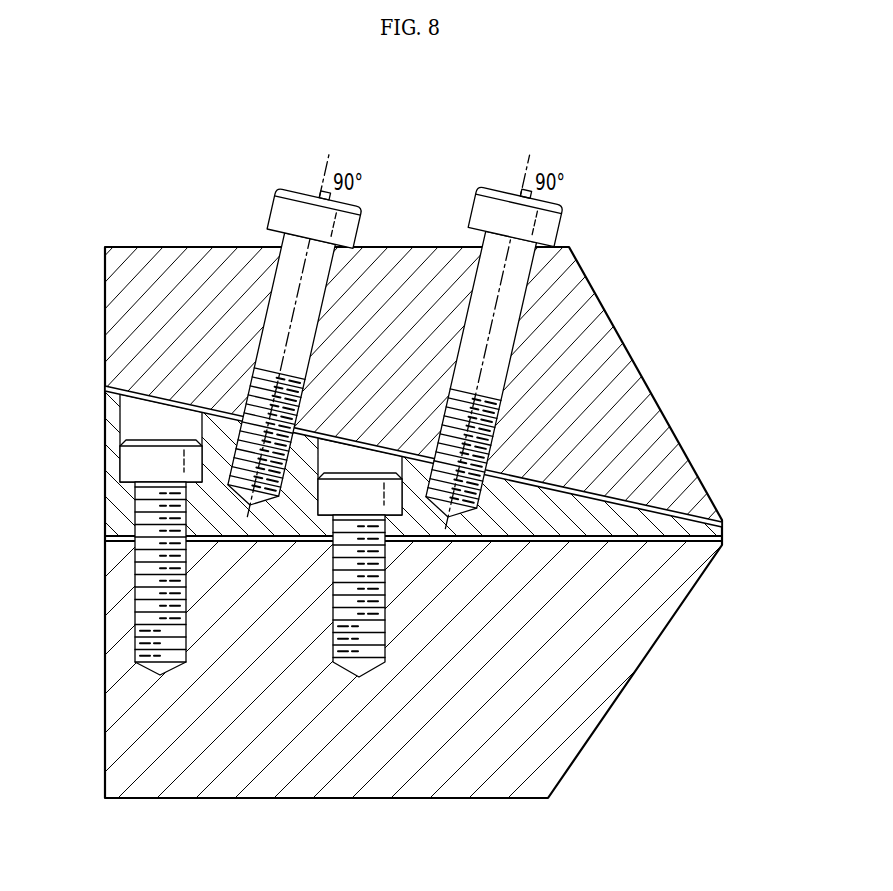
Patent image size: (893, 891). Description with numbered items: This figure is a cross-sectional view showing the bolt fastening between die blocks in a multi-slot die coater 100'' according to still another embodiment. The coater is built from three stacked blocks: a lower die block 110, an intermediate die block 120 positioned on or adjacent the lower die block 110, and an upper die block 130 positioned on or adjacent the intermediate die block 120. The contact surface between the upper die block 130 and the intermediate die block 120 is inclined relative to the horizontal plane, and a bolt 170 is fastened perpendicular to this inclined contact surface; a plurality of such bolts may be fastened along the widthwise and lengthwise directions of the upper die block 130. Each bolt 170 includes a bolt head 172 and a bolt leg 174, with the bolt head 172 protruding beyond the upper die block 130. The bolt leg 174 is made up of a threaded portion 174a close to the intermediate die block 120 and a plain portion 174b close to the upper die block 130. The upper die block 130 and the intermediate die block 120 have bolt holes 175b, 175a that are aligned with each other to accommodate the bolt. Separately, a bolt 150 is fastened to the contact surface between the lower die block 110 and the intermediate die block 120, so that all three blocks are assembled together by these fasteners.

The multi-slot die coater 100'' is at (413, 450).
The lower die block 110 is at (80, 671).
The intermediate die block 120 is at (80, 471).
The upper die block 130 is at (80, 316).
The bolt 150 is at (372, 650).
The bolt 170 is at (512, 341).
The bolt head 172 is at (548, 229).
The bolt leg 174 is at (512, 341).
The threaded portion 174a is at (500, 447).
The plain portion 174b is at (507, 325).
The bolt hole 175a is at (428, 482).
The bolt hole 175b is at (465, 333).